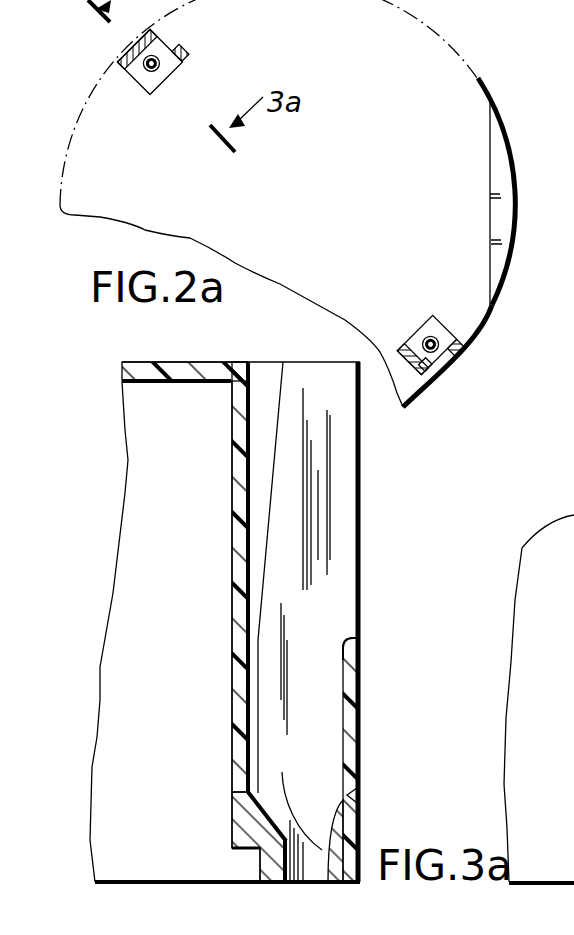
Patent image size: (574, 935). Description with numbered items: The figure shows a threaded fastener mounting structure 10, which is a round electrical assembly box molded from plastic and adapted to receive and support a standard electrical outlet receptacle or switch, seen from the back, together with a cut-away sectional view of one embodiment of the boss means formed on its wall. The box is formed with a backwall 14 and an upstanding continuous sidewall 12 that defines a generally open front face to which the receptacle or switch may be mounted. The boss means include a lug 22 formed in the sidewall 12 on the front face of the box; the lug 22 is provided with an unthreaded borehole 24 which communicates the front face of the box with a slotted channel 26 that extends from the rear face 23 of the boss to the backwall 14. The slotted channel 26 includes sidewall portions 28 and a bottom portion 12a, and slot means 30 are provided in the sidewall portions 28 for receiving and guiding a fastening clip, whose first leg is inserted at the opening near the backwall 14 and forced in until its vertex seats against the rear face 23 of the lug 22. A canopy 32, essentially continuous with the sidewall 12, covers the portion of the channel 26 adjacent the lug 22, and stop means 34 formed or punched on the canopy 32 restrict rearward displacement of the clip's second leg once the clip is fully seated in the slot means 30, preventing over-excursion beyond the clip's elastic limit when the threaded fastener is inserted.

In FIG. 2a, the threaded fastener mounting structure 10 is at (508, 88).
In FIG. 2a, the sidewall 12 is at (490, 88).
In FIG. 3a, the sidewall 12 is at (466, 622).
In FIG. 2a, the bottom portion 12a is at (410, 330).
In FIG. 3a, the bottom portion 12a is at (235, 557).
In FIG. 2a, the backwall 14 is at (305, 208).
In FIG. 3a, the backwall 14 is at (128, 370).
In FIG. 3a, the lug 22 is at (267, 858).
In FIG. 3a, the rear face 23 is at (278, 793).
In FIG. 3a, the unthreaded borehole 24 is at (293, 836).
In FIG. 2a, the slotted channel 26 is at (163, 65).
In FIG. 3a, the slotted channel 26 is at (326, 641).
In FIG. 2a, the sidewall portions 28 is at (463, 348).
In FIG. 3a, the sidewall portions 28 is at (330, 630).
In FIG. 2a, the slot means 30 is at (431, 320).
In FIG. 3a, the slot means 30 is at (263, 487).
In FIG. 2a, the canopy 32 is at (463, 363).
In FIG. 3a, the canopy 32 is at (348, 643).
In FIG. 3a, the stop means 34 is at (357, 795).